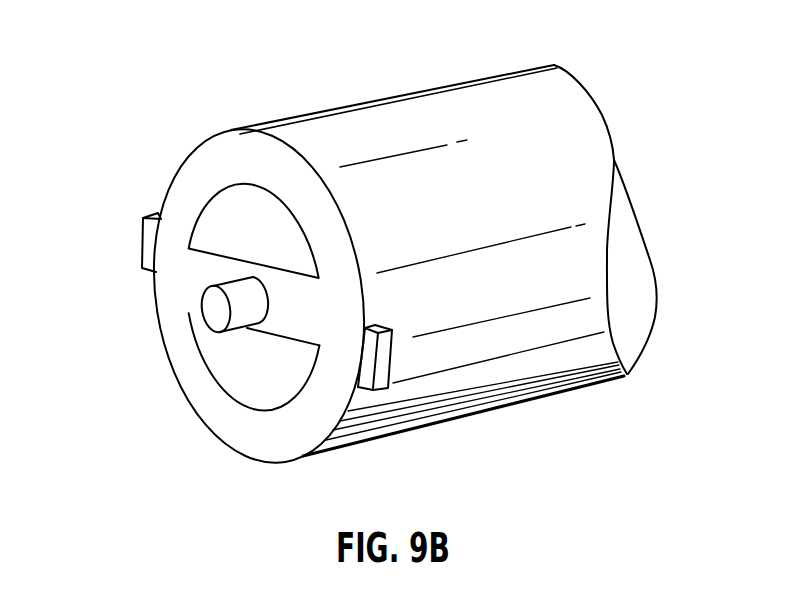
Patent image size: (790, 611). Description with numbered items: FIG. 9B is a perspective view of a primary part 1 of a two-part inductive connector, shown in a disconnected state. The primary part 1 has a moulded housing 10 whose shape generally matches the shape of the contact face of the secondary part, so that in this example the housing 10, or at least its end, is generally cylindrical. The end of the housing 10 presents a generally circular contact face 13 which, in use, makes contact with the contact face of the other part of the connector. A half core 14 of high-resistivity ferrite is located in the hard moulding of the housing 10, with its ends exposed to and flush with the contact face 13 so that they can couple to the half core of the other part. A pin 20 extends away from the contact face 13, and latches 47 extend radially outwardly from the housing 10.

The primary part 1 is at (508, 345).
The housing 10 is at (363, 126).
The contact face 13 is at (236, 148).
The half core 14 is at (220, 210).
The pin 20 is at (210, 317).
The latches 47 is at (142, 240).